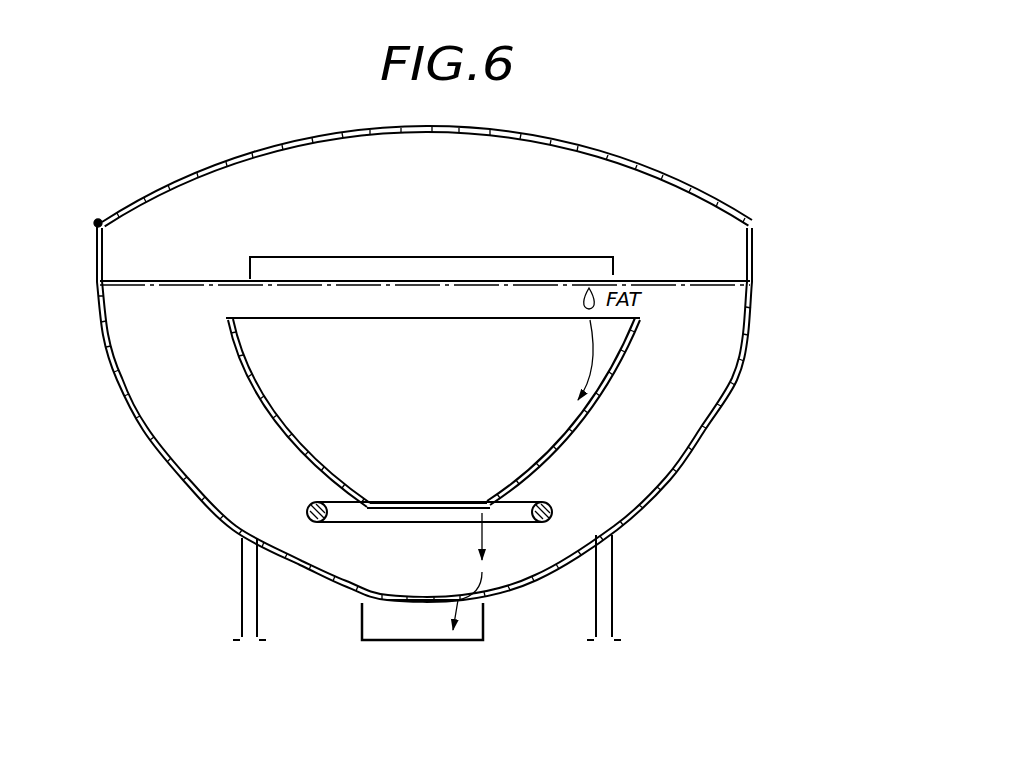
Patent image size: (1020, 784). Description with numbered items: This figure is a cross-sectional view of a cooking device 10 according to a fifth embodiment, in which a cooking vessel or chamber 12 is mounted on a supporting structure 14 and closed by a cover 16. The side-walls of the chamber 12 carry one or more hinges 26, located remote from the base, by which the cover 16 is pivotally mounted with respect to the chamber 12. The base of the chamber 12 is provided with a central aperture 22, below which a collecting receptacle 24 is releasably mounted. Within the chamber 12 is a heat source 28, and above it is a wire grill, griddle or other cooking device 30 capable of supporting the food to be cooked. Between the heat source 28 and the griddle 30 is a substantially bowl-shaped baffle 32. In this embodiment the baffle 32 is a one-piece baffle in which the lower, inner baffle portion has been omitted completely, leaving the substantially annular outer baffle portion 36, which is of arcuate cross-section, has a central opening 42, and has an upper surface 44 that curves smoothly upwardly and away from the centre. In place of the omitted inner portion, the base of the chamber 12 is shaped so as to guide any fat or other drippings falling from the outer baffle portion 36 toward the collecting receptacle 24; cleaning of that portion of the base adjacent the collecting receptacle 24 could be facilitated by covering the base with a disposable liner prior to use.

The cooking device 10 is at (757, 343).
The cooking vessel or chamber 12 is at (685, 468).
The supporting structure 14 is at (613, 587).
The cover 16 is at (140, 193).
The central aperture 22 is at (387, 598).
The collecting receptacle 24 is at (380, 642).
The hinges 26 is at (98, 222).
The heat source 28 is at (553, 510).
The griddle 30 is at (155, 282).
The baffle 32 is at (254, 399).
The outer baffle portion 36 is at (606, 384).
The central opening 42 is at (391, 505).
The upper surface 44 is at (288, 425).